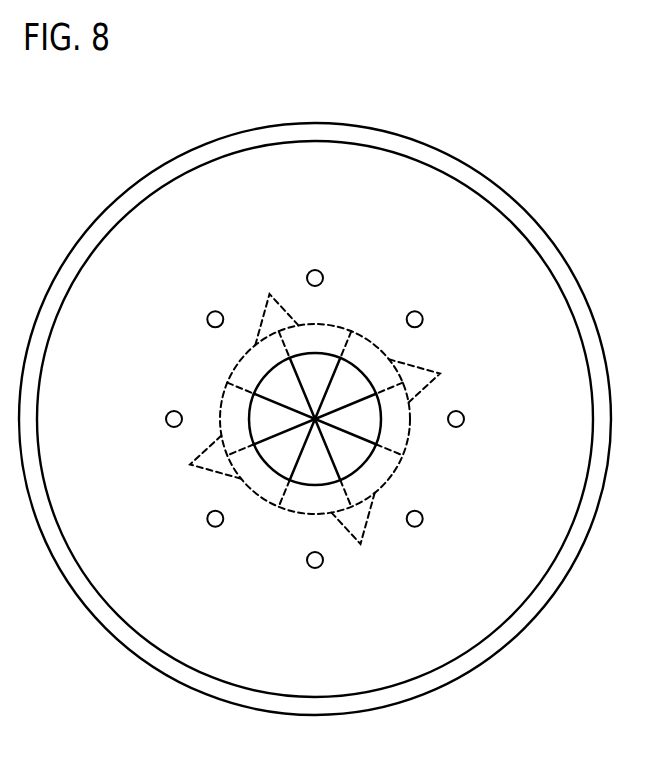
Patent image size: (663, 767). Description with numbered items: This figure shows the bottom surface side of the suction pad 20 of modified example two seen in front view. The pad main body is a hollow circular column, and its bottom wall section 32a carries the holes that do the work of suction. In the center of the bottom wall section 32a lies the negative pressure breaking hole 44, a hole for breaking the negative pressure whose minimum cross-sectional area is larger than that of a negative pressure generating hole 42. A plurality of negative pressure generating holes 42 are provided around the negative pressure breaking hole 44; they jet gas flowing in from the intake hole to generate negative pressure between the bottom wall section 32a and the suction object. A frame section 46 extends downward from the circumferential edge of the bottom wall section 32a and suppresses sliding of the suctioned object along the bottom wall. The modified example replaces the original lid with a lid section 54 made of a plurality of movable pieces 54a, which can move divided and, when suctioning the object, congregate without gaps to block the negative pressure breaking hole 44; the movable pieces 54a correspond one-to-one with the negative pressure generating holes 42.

The suction pad 20 is at (86, 104).
The bottom wall section 32a is at (438, 637).
The negative pressure generating hole 42 is at (314, 270).
The negative pressure breaking hole 44 is at (315, 380).
The frame section 46 is at (530, 612).
The lid section 54 is at (412, 460).
The movable piece 54a is at (316, 424).